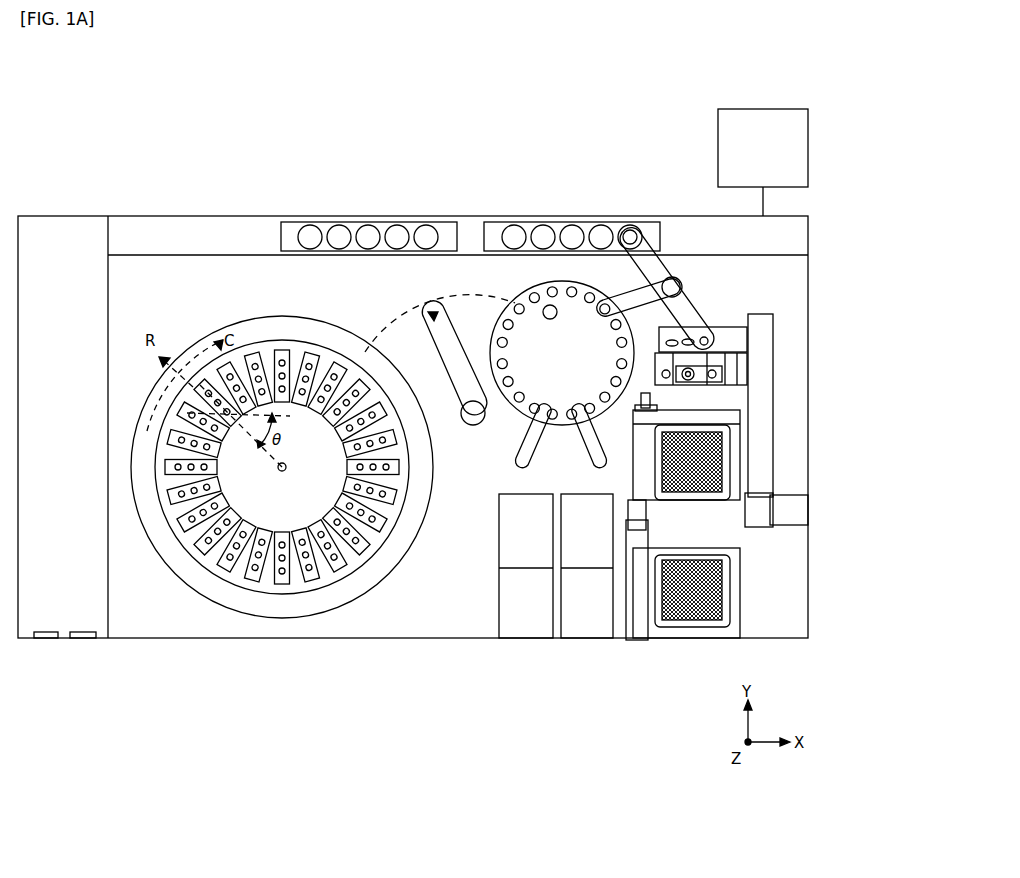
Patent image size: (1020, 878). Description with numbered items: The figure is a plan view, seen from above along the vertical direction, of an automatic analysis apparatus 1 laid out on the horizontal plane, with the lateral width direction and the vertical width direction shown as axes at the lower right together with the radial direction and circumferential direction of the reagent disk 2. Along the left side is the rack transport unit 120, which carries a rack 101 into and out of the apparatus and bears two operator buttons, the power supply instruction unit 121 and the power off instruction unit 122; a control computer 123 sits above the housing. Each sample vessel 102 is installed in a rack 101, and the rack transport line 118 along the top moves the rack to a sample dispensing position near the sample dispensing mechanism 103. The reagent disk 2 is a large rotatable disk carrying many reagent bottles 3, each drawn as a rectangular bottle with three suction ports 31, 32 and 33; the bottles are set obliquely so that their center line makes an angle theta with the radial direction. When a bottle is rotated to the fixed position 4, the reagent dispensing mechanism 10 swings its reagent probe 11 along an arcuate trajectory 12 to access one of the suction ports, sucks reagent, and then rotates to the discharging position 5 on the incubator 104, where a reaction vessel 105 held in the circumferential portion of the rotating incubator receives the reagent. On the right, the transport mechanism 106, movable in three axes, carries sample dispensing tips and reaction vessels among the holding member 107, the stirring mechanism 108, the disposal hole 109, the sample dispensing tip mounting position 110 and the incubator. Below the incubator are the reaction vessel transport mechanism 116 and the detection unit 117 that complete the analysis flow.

The automatic analysis apparatus 1 is at (132, 70).
The reagent disk 2 is at (275, 619).
The reagent bottle 3 is at (232, 568).
The position on the reagent disk 4 is at (372, 358).
The discharging position 5 is at (520, 304).
The reagent dispensing mechanism 10 is at (444, 300).
The reagent probe 11 is at (430, 311).
The arcuate trajectory 12 is at (471, 303).
The suction port 31 is at (224, 545).
The suction port 32 is at (242, 556).
The suction port 33 is at (240, 585).
The rack 101 is at (297, 229).
The sample vessel 102 is at (372, 230).
The sample dispensing mechanism 103 is at (632, 231).
The incubator 104 is at (578, 298).
The reaction vessel 105 is at (548, 300).
The transport mechanism 106 is at (740, 342).
The holding member 107 is at (720, 480).
The stirring mechanism 108 is at (715, 378).
The disposal hole 109 is at (683, 325).
The sample dispensing tip mounting position 110 is at (668, 378).
The reaction vessel transport mechanism 116 is at (572, 448).
The detection unit 117 is at (585, 626).
The rack transport line 118 is at (231, 230).
The rack transport unit 120 is at (68, 228).
The power supply instruction unit 121 is at (46, 640).
The power off instruction unit 122 is at (82, 640).
The control computer 123 is at (800, 152).